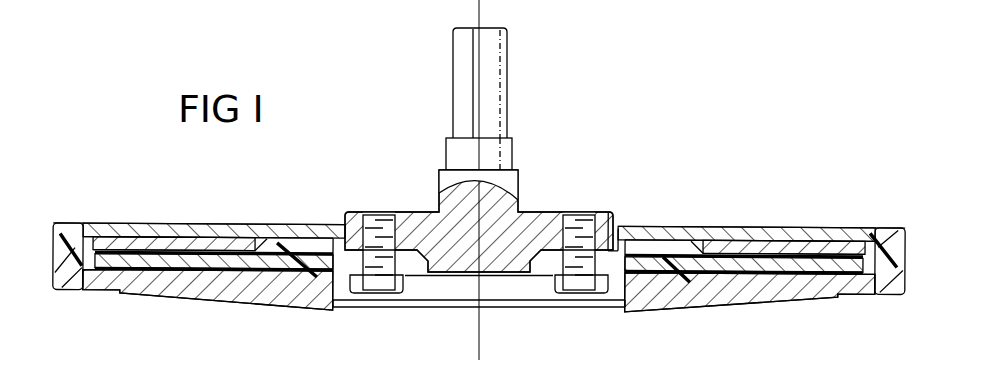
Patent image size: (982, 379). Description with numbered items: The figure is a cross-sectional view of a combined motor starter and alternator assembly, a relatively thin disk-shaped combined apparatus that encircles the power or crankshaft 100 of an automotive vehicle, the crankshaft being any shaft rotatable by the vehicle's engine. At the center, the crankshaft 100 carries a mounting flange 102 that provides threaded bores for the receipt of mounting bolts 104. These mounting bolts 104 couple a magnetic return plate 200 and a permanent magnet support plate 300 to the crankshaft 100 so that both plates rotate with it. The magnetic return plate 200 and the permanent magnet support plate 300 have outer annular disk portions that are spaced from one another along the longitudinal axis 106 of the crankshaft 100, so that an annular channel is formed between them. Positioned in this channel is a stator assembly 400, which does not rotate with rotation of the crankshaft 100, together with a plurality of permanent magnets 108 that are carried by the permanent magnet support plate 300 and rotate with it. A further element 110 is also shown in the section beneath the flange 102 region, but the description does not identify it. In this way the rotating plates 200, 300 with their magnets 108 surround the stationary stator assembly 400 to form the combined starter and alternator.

The crankshaft 100 is at (493, 100).
The mounting flange 102 is at (540, 218).
The mounting bolts 104 is at (372, 290).
The longitudinal axis 106 is at (480, 18).
The permanent magnets 108 is at (190, 247).
The lower plate 110 is at (508, 263).
The magnetic return plate 200 is at (245, 310).
The permanent magnet support plate 300 is at (316, 208).
The stator assembly 400 is at (72, 218).